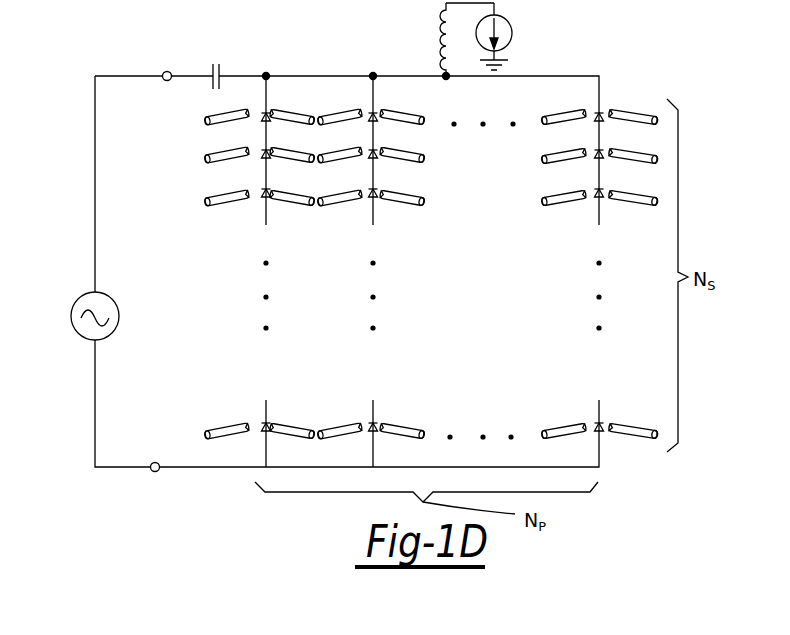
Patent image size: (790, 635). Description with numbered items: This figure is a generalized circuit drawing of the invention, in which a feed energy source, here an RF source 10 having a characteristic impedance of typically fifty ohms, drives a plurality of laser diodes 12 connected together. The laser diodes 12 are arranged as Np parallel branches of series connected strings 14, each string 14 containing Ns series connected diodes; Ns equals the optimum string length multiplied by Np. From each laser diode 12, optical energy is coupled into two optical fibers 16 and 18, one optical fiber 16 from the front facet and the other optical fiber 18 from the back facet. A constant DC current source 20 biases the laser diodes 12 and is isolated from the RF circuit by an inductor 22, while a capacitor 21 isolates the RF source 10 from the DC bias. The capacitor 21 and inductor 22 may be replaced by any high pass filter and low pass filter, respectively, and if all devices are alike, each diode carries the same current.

The RF source 10 is at (78, 331).
The laser diode 12 is at (263, 197).
The series connected string 14 is at (262, 447).
The optical fiber 16 is at (210, 152).
The optical fiber 18 is at (284, 147).
The constant DC current source 20 is at (512, 26).
The capacitor 21 is at (218, 62).
The inductor 22 is at (444, 36).